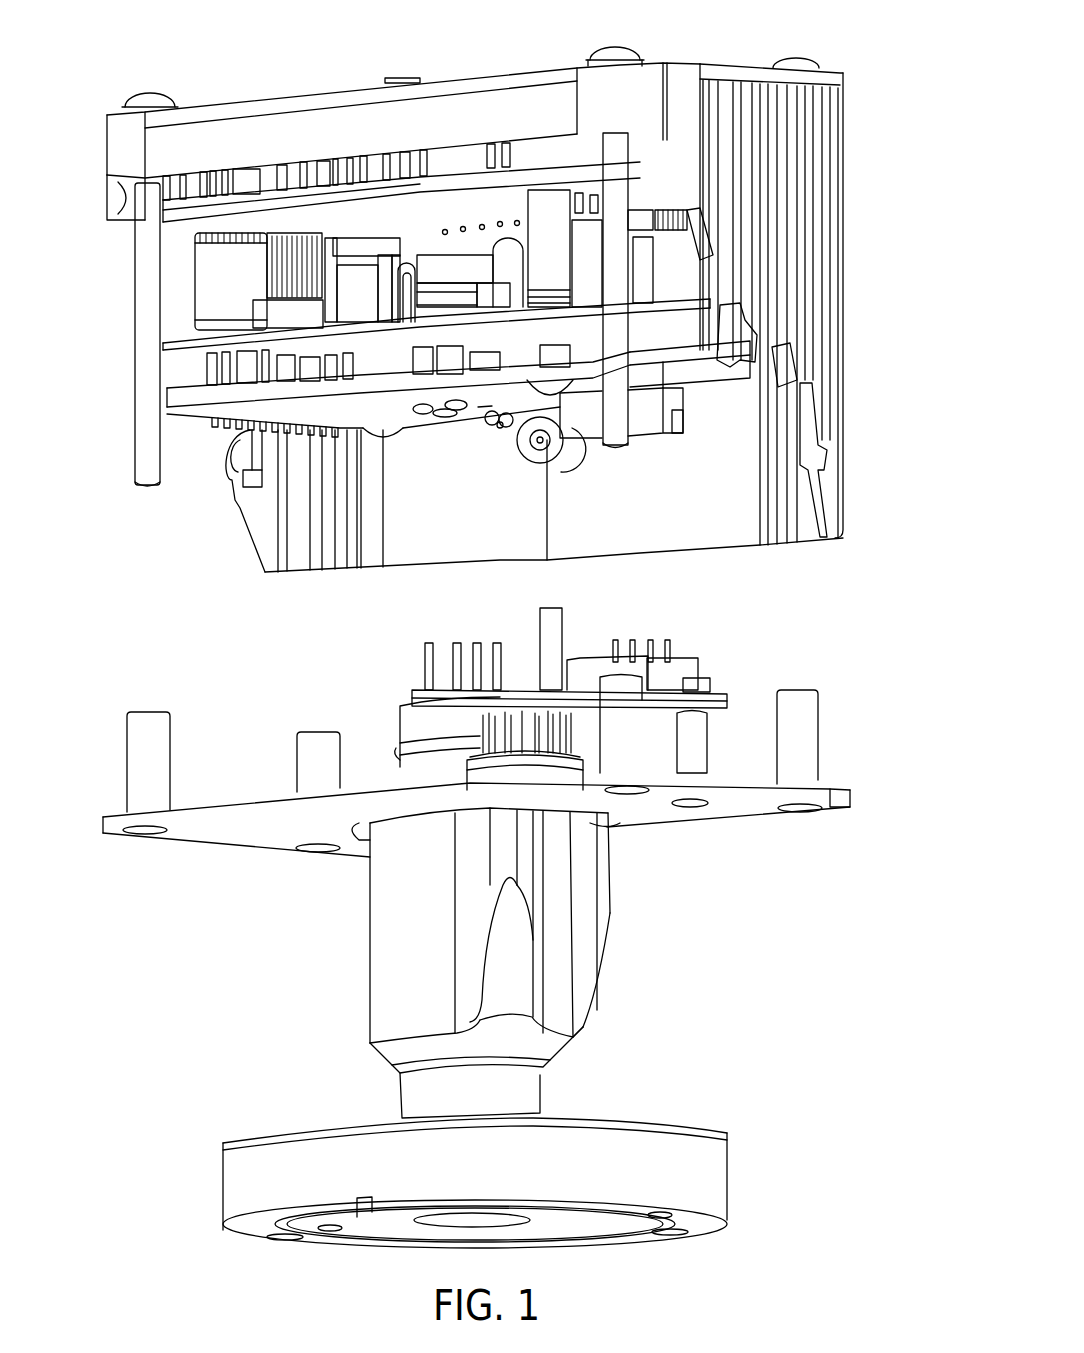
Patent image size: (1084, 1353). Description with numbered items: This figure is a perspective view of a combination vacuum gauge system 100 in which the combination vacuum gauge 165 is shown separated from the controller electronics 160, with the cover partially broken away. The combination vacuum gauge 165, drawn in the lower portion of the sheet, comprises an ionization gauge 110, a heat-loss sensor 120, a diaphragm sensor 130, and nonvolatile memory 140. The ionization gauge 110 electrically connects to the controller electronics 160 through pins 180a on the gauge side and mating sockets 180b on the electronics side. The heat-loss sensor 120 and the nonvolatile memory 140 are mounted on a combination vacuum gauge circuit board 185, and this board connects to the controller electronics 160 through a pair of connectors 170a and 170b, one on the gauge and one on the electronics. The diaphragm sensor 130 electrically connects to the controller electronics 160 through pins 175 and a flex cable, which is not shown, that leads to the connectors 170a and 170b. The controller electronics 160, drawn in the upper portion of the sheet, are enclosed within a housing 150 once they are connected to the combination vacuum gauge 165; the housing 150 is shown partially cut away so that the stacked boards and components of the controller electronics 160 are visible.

The combination vacuum gauge system 100 is at (833, 17).
The ionization gauge 110 is at (407, 718).
The heat-loss sensor 120 is at (577, 782).
The diaphragm sensor 130 is at (688, 663).
The nonvolatile memory 140 is at (527, 685).
The housing 150 is at (838, 182).
The controller electronics 160 is at (118, 347).
The combination vacuum gauge 165 is at (240, 933).
The connector 170a is at (585, 677).
The connector 170b is at (653, 413).
The pins 175 is at (650, 640).
The pins 180a is at (425, 657).
The sockets 180b is at (422, 414).
The combination vacuum gauge circuit board 185 is at (713, 698).